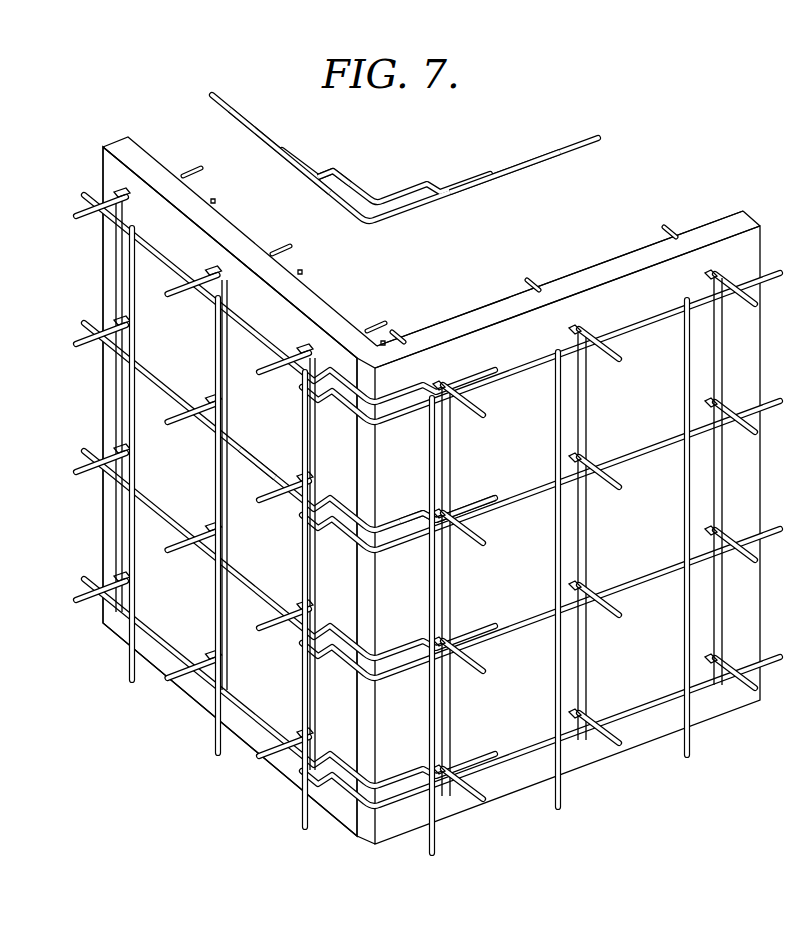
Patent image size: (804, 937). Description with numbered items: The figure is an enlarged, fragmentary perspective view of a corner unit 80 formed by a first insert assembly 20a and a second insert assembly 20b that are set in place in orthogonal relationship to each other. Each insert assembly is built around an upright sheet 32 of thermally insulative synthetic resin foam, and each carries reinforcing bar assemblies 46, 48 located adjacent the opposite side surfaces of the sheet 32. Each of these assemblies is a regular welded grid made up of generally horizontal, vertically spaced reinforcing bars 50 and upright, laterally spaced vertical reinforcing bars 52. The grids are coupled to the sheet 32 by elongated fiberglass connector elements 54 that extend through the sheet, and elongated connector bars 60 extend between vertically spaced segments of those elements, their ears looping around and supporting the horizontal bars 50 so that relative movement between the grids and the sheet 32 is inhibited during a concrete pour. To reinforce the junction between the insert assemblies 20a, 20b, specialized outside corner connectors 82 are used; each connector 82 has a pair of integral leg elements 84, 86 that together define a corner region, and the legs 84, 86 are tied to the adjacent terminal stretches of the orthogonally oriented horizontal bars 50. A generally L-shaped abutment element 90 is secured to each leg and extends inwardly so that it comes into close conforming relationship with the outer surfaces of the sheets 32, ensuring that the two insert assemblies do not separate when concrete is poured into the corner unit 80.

The first insert assembly 20a is at (213, 68).
The second insert assembly 20b is at (722, 200).
The sheet 32 is at (265, 226).
The reinforcing bar assembly 46 is at (161, 671).
The reinforcing bar assembly 48 is at (225, 197).
The horizontally extending reinforcing bar 50 is at (260, 453).
The vertical reinforcing bar 52 is at (302, 270).
The connector element 54 is at (380, 308).
The connector bar 60 is at (745, 344).
The corner unit 80 is at (682, 154).
The outside corner connector 82 is at (526, 125).
The leg element 84 is at (519, 170).
The leg element 86 is at (250, 132).
The abutment element 90 is at (400, 187).